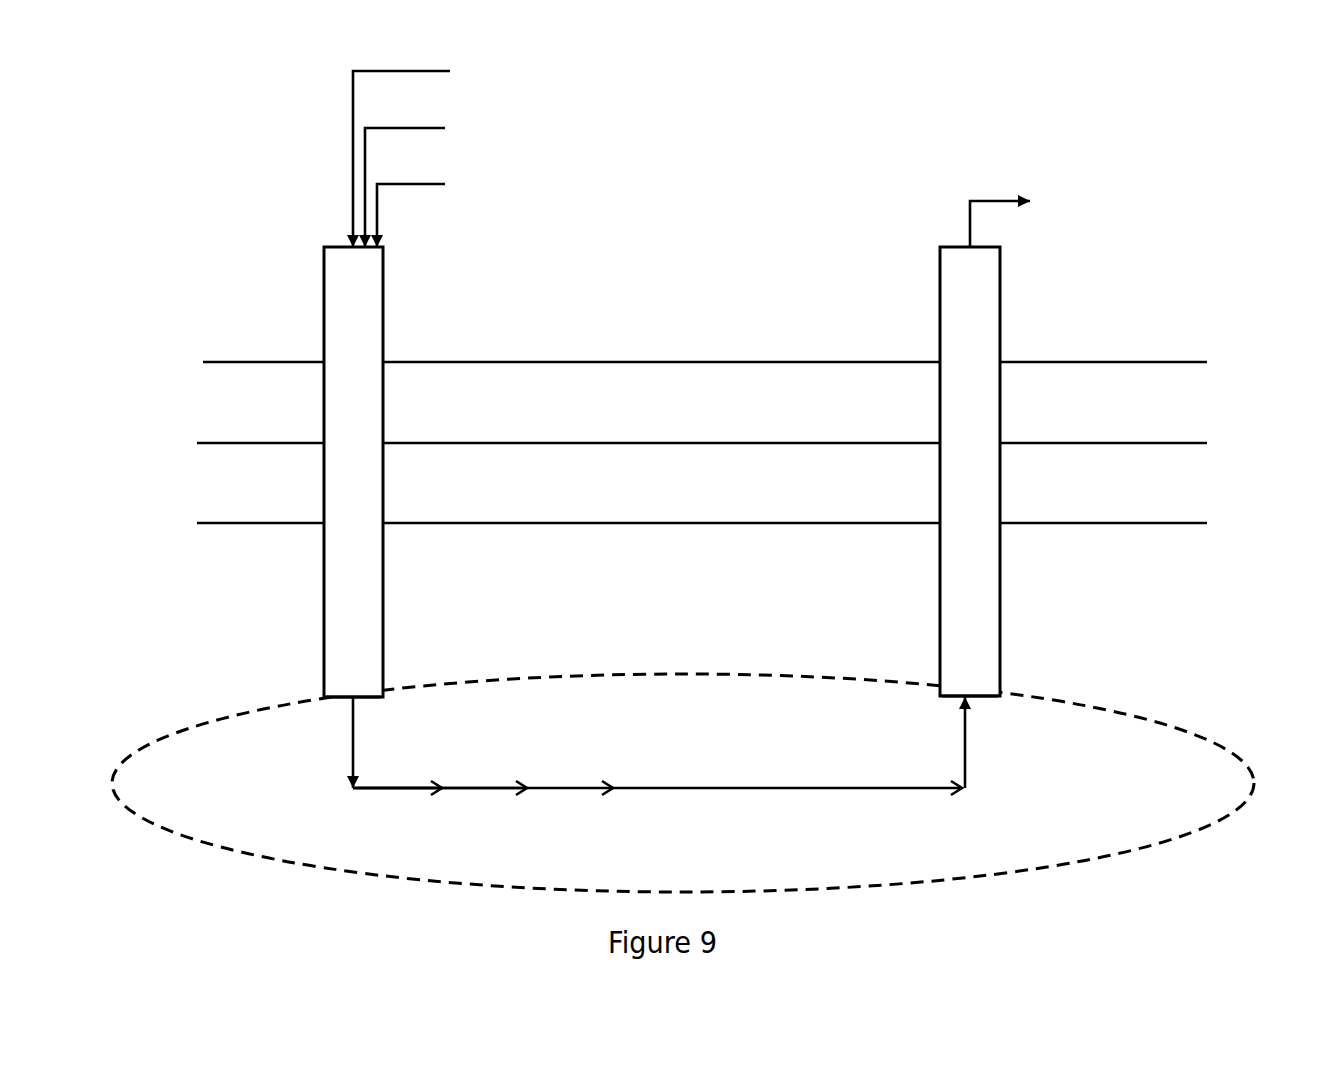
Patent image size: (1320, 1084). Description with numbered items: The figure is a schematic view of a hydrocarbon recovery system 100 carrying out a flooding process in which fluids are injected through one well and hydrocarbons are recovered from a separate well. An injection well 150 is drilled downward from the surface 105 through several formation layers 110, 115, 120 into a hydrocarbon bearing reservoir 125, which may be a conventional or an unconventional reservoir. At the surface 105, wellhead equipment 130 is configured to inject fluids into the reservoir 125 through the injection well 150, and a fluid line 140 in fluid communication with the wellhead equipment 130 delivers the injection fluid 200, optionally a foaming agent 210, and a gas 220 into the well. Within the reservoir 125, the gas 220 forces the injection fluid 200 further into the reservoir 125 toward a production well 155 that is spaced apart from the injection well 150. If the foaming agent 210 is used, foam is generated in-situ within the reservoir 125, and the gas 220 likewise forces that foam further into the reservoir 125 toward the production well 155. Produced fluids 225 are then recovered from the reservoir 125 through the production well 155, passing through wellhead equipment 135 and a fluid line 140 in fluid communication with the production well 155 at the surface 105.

The hydrocarbon recovery system 100 is at (246, 95).
The surface 105 is at (245, 357).
The formation layer 110 is at (475, 411).
The formation layer 115 is at (475, 492).
The formation layer 120 is at (477, 594).
The hydrocarbon bearing reservoir 125 is at (608, 673).
The wellhead equipment 130 is at (322, 312).
The wellhead equipment 135 is at (940, 313).
The fluid line 140 is at (374, 181).
The injection well 150 is at (323, 650).
The production well 155 is at (940, 650).
The injection fluid 200 is at (587, 793).
The foaming agent 210 is at (505, 793).
The gas 220 is at (415, 793).
The produced fluids 225 is at (885, 793).